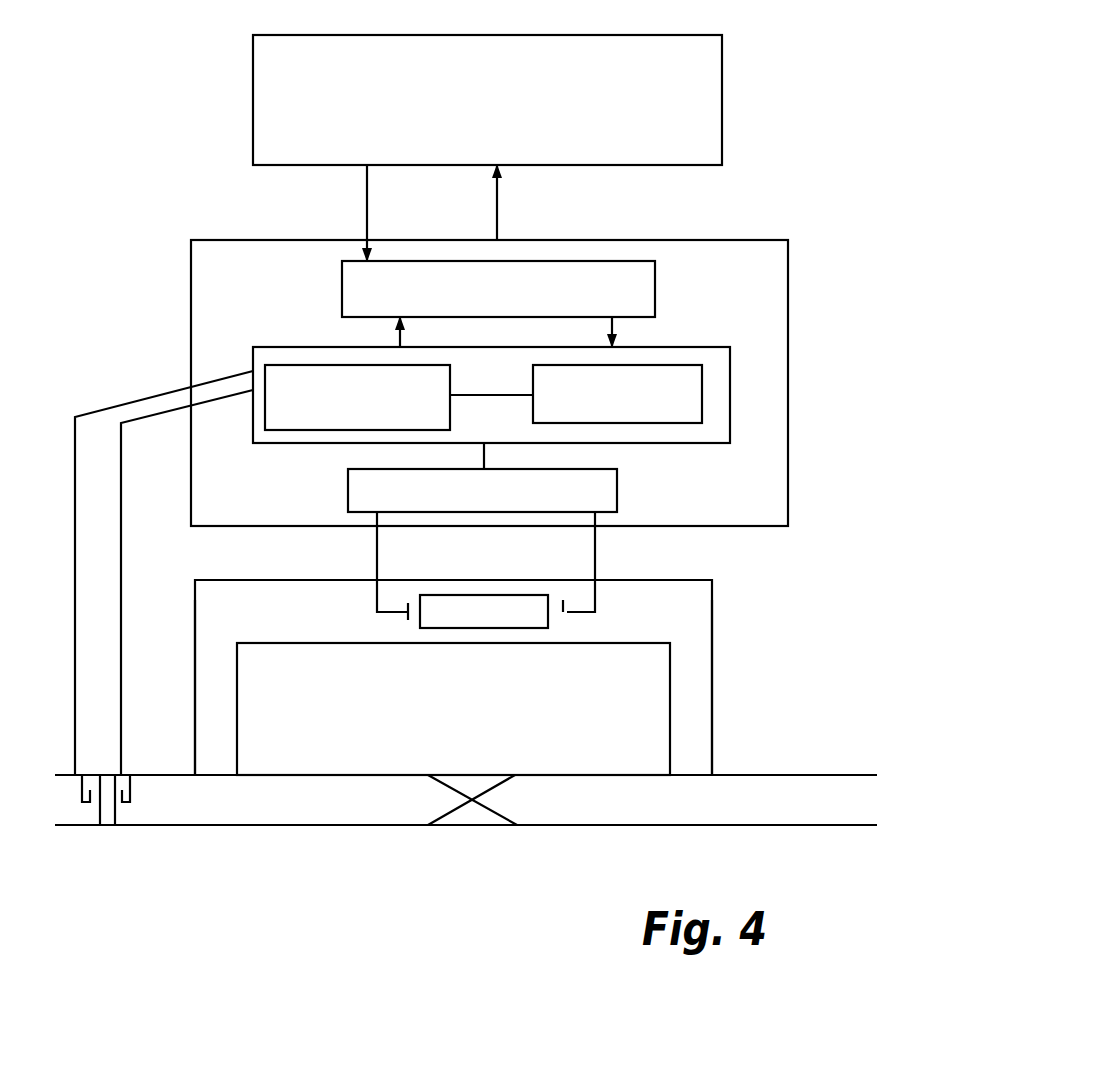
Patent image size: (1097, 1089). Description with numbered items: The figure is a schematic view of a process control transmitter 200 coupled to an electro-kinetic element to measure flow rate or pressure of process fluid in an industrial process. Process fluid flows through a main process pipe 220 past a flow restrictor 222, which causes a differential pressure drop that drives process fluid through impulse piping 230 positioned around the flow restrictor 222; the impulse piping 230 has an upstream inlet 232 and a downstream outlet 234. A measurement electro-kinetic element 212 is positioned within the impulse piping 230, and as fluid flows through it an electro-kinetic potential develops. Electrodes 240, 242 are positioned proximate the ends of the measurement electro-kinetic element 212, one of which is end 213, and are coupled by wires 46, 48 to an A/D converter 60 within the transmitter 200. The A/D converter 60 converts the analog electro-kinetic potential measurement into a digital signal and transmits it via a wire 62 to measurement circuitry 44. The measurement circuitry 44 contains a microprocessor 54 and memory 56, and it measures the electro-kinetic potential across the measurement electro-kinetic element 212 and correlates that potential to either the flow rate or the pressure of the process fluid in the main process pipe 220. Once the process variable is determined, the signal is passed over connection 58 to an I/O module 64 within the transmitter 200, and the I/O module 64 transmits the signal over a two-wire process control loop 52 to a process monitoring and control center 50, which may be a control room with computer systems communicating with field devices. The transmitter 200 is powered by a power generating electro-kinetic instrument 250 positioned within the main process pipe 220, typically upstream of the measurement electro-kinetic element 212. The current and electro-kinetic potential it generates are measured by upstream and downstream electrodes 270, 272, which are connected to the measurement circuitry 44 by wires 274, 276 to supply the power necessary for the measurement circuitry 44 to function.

The process monitoring and control center 50 is at (722, 117).
The two-wire process control loop 52 is at (497, 214).
The process control transmitter 200 is at (185, 316).
The I/O module 64 is at (655, 283).
The data connection 58 is at (613, 332).
The measurement circuitry 44 is at (270, 347).
The microprocessor 54 is at (265, 410).
The memory 56 is at (702, 374).
The wire 62 is at (484, 462).
The A/D converter 60 is at (617, 492).
The wire 46 is at (377, 559).
The wire 48 is at (595, 559).
The electrode 240 is at (405, 626).
The electrode 242 is at (563, 606).
The impulse piping 230 is at (195, 592).
The upstream inlet 232 is at (218, 762).
The downstream outlet 234 is at (683, 770).
The measurement electro-kinetic element 212 is at (538, 607).
The end 213 is at (550, 622).
The main process pipe 220 is at (420, 628).
The flow restrictor 222 is at (470, 815).
The wire 274 is at (98, 533).
The wire 276 is at (121, 483).
The upstream electrode 270 is at (90, 803).
The downstream electrode 272 is at (122, 806).
The power generating electro-kinetic instrument 250 is at (112, 822).